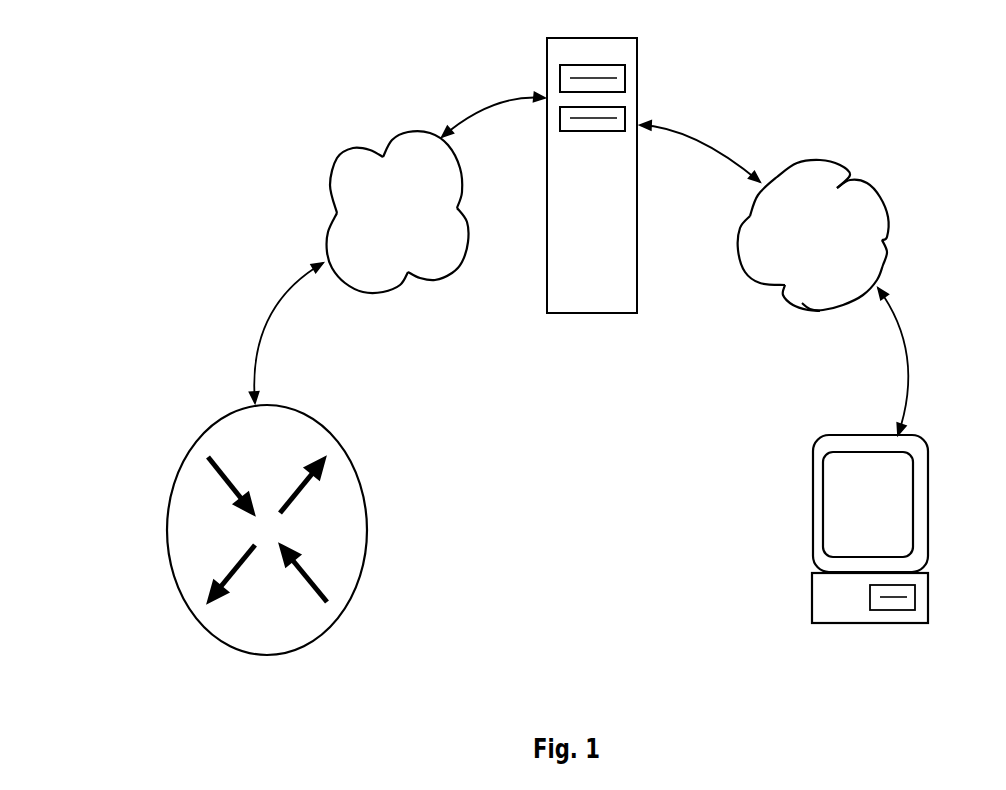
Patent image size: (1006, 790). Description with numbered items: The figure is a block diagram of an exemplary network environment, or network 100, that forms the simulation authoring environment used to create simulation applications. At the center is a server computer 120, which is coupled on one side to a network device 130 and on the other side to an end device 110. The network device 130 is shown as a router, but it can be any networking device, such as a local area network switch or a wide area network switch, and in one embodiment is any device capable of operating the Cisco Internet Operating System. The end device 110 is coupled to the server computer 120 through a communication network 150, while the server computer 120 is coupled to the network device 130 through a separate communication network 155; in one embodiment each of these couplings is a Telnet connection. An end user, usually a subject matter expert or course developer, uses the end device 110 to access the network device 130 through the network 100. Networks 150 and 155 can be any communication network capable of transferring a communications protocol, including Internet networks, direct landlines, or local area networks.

The network 100 is at (180, 68).
The end device 110 is at (902, 520).
The server computer 120 is at (592, 298).
The network device 130 is at (350, 497).
The communication network 150 is at (805, 298).
The communication network 155 is at (443, 262).